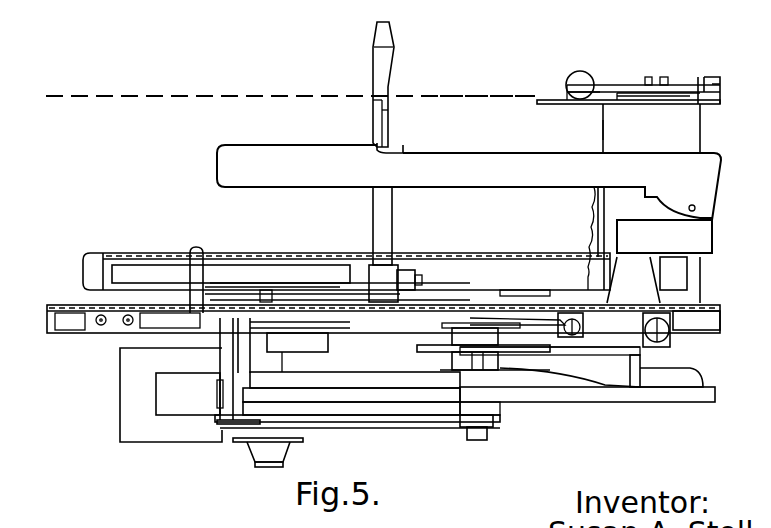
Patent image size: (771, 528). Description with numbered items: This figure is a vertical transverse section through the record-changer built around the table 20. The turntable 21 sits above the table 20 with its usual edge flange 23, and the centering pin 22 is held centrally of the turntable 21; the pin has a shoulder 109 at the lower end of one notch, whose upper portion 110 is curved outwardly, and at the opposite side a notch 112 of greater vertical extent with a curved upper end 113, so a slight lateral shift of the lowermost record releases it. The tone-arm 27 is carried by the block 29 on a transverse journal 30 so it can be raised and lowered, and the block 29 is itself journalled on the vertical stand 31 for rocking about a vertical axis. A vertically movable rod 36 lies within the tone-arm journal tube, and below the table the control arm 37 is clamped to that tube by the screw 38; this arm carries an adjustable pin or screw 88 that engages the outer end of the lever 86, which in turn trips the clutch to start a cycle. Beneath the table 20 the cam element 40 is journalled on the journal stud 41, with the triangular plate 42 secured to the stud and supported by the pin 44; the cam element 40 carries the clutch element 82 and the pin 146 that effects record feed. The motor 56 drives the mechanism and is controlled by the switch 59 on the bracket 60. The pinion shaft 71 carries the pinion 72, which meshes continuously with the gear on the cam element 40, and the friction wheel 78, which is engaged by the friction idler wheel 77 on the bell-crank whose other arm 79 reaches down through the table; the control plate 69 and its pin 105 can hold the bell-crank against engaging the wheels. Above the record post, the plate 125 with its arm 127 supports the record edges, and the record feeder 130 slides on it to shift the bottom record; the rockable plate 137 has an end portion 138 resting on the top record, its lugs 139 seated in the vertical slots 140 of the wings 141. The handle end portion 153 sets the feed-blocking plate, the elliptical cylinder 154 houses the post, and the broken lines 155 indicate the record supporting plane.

The table 20 is at (72, 324).
The turntable 21 is at (146, 253).
The centering pin 22 is at (392, 212).
The edge flange 23 is at (83, 270).
The tone-arm 27 is at (482, 190).
The block 29 is at (680, 232).
The transverse journal 30 is at (696, 206).
The vertical stand 31 is at (637, 275).
The vertically movable rod 36 is at (640, 357).
The control arm 37 is at (596, 340).
The screw 38 is at (668, 322).
The cam element 40 is at (417, 416).
The journal stud 41 is at (500, 360).
The triangular plate 42 is at (368, 430).
The pin 44 is at (230, 395).
The motor 56 is at (175, 400).
The switch 59 is at (312, 355).
The bracket 60 is at (333, 338).
The plate 69 is at (290, 310).
The pinion shaft 71 is at (233, 285).
The pinion 72 is at (220, 392).
The friction idler wheel 77 is at (420, 278).
The friction wheel 78 is at (160, 273).
The arm 79 is at (285, 298).
The clutch element 82 is at (505, 322).
The lever 86 is at (535, 318).
The pin or screw 88 is at (570, 320).
The pin 105 is at (266, 290).
The shoulder 109 is at (375, 107).
The upper portion of the notch 110 is at (373, 66).
The notch 112 is at (389, 115).
The curved upper end 113 is at (394, 80).
The plate 125 is at (634, 117).
The arm 127 is at (664, 108).
The record feeder 130 is at (622, 92).
The rockable finger or plate 137 is at (598, 85).
The end portion 138 is at (580, 72).
The lugs 139 is at (700, 96).
The vertical slots 140 is at (710, 77).
The wings 141 is at (648, 77).
The pin 146 is at (480, 400).
The end portion 153 is at (598, 203).
The elliptical cylinder 154 is at (594, 134).
The broken lines 155 is at (473, 97).